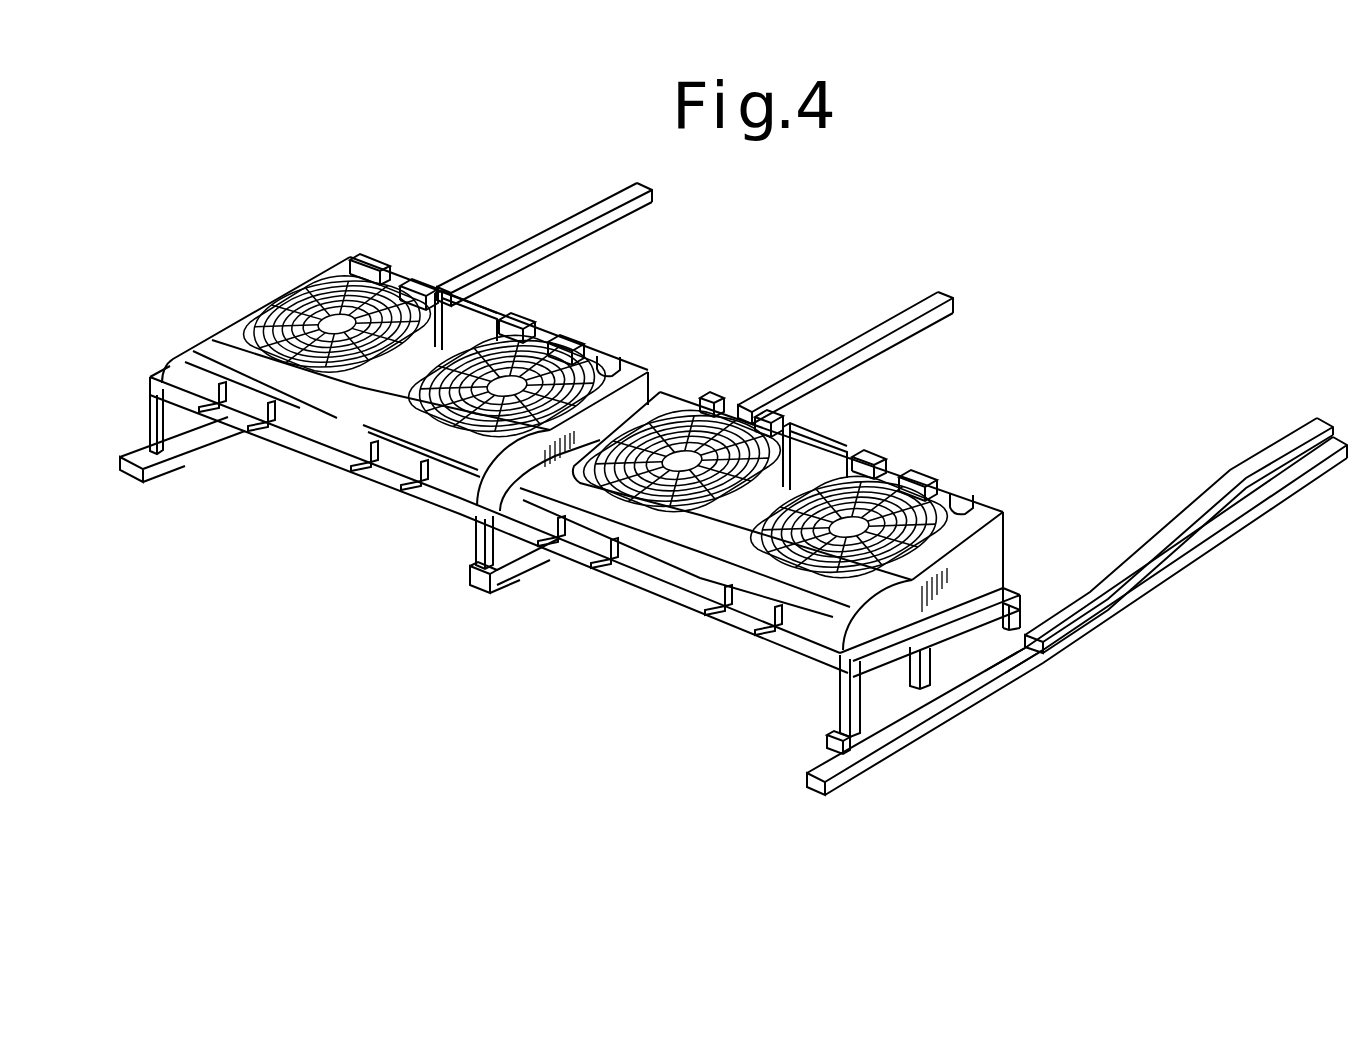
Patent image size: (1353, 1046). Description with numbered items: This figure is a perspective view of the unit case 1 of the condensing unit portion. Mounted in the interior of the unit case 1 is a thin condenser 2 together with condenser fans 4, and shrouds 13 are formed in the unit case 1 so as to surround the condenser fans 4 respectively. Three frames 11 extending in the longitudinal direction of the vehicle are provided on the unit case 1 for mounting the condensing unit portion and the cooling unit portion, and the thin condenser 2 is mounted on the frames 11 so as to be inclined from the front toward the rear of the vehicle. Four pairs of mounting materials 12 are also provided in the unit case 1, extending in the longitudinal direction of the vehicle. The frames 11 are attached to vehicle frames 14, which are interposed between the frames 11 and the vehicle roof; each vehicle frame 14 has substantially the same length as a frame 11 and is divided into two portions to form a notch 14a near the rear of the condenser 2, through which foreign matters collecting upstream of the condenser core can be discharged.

The unit case 1 is at (670, 577).
The thin condenser 2 is at (958, 608).
The condenser fan 4 is at (533, 378).
The frame 11 is at (1233, 478).
The mounting material 12 is at (766, 636).
The shroud 13 is at (713, 510).
The vehicle frame 14 is at (907, 733).
The notch 14a is at (1022, 655).